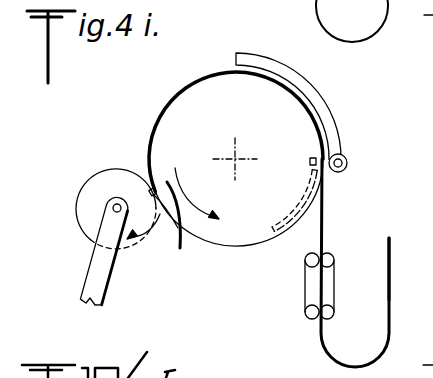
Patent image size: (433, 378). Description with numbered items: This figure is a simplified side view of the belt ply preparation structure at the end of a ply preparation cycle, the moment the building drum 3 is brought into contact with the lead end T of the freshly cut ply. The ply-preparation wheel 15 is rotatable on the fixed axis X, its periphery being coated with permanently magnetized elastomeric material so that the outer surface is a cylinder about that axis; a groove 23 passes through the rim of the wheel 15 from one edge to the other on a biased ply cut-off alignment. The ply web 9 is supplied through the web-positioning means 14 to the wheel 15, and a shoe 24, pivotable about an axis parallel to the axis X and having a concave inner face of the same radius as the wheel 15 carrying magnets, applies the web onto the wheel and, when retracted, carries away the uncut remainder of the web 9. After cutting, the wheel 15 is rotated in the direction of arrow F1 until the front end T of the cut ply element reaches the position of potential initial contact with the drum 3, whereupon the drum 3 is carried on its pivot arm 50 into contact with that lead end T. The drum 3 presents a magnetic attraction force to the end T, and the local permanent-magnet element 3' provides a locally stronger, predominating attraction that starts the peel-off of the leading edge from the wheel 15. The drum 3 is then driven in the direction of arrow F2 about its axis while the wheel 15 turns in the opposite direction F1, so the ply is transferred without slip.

The building drum 3 is at (116, 186).
The local permanent-magnet element 3' is at (163, 181).
The ply web 9 is at (389, 248).
The web-positioning means 14 is at (343, 269).
The ply-preparation wheel 15 is at (188, 107).
The groove 23 is at (297, 212).
The shoe 24 is at (317, 84).
The pivot arm 50 is at (111, 282).
The front end of the ply element T is at (179, 226).
The fixed axis of wheel X is at (238, 155).
The direction of rotation of wheel F1 is at (197, 193).
The direction of rotation of drum F2 is at (147, 241).